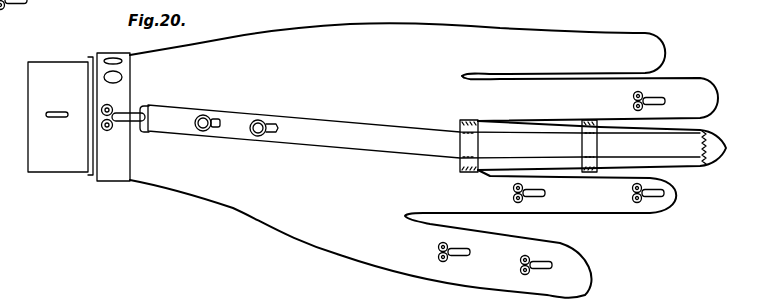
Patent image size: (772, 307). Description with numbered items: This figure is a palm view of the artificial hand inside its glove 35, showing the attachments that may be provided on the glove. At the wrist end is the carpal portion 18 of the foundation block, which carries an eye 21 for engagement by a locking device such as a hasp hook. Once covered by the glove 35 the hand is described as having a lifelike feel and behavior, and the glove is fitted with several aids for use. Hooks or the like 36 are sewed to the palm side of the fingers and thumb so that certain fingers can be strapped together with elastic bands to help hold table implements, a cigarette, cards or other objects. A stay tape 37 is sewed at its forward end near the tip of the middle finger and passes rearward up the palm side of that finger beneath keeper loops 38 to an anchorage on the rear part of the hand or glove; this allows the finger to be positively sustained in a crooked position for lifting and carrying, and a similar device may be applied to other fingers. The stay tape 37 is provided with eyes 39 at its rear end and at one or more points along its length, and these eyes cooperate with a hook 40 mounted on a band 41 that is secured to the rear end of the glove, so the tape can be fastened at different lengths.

The carpal portion 18 is at (424, 149).
The eye 21 is at (57, 117).
The glove 35 is at (402, 77).
The hooks 36 is at (553, 266).
The stay tape 37 is at (374, 146).
The keeper loops 38 is at (582, 146).
The eyes 39 is at (255, 136).
The hook 40 is at (141, 107).
The band 41 is at (110, 173).